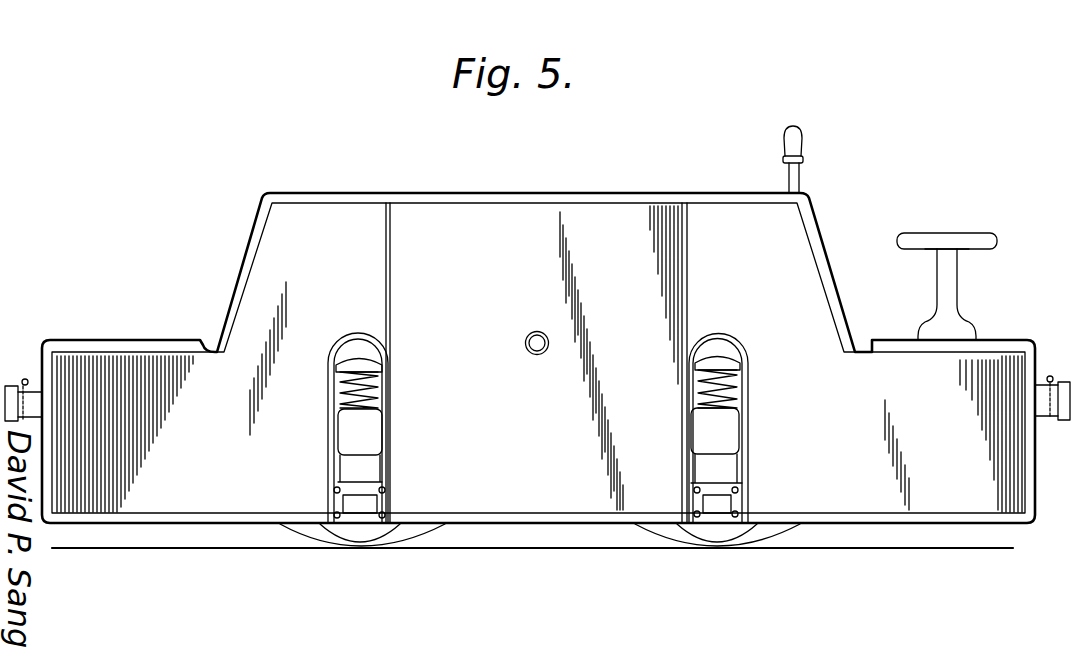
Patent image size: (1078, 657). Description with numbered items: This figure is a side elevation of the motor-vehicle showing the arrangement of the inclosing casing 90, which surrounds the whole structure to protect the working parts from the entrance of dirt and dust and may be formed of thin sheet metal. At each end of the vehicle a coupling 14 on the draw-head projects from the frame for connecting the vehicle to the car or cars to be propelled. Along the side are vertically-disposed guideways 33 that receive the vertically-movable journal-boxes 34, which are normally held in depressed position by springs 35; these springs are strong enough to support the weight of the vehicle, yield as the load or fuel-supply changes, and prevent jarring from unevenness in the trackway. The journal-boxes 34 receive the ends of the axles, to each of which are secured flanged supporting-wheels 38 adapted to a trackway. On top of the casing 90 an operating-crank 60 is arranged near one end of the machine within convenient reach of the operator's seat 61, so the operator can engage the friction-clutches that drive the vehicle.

The couplings 14 is at (29, 373).
The guideways 33 is at (740, 393).
The journal-boxes 34 is at (734, 437).
The springs 35 is at (720, 382).
The flanged supporting-wheels 38 is at (325, 535).
The operating-crank 60 is at (801, 185).
The operator's seat 61 is at (938, 238).
The casing 90 is at (538, 370).